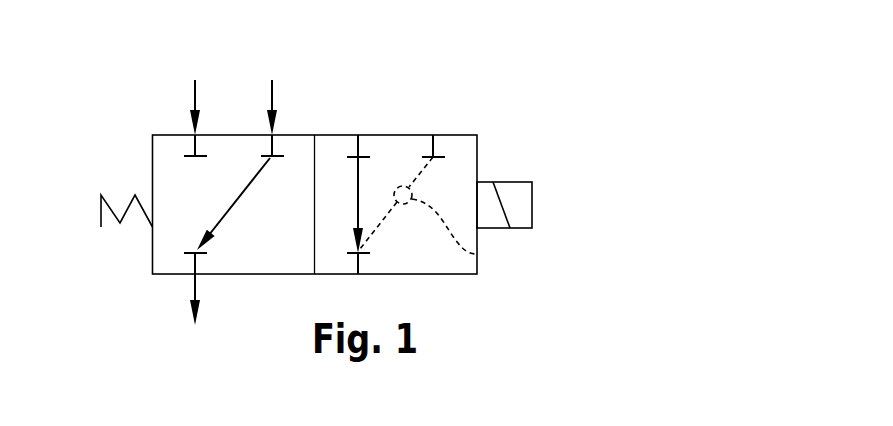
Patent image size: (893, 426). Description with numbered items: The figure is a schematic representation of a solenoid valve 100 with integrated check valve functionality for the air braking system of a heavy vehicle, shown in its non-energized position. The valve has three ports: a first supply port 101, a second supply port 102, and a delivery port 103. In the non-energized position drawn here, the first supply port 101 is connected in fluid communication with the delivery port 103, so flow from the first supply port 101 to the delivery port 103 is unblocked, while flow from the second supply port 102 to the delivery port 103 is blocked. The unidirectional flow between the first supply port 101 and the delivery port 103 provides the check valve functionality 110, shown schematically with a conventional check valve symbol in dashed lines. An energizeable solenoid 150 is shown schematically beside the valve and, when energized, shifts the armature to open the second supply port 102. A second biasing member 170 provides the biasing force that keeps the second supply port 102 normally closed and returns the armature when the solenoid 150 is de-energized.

The solenoid valve 100 is at (100, 68).
The first supply port 101 is at (272, 135).
The second supply port 102 is at (195, 135).
The delivery port 103 is at (198, 276).
The check valve functionality 110 is at (477, 254).
The solenoid 150 is at (507, 182).
The second biasing member 170 is at (119, 223).